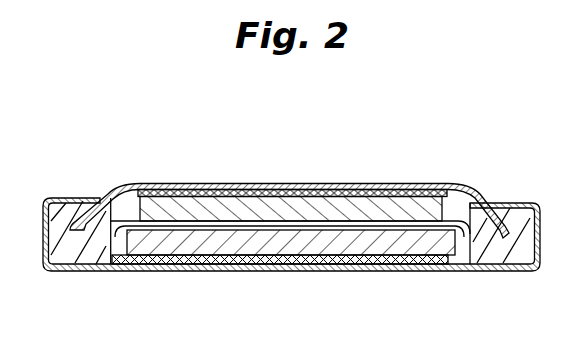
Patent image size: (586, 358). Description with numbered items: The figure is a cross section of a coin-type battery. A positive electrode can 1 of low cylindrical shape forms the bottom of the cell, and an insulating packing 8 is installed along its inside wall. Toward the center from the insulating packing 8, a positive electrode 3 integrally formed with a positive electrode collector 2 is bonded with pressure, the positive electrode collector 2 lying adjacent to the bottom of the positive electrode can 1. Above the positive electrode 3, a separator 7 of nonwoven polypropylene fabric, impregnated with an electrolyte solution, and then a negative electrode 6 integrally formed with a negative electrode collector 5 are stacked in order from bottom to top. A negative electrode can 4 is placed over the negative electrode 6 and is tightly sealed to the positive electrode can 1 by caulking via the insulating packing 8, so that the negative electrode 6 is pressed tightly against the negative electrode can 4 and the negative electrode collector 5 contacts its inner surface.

The positive electrode can 1 is at (202, 267).
The positive electrode collector 2 is at (260, 257).
The positive electrode 3 is at (318, 246).
The negative electrode can 4 is at (191, 184).
The negative electrode collector 5 is at (274, 189).
The negative electrode 6 is at (363, 207).
The separator 7 is at (384, 227).
The insulating packing 8 is at (508, 210).